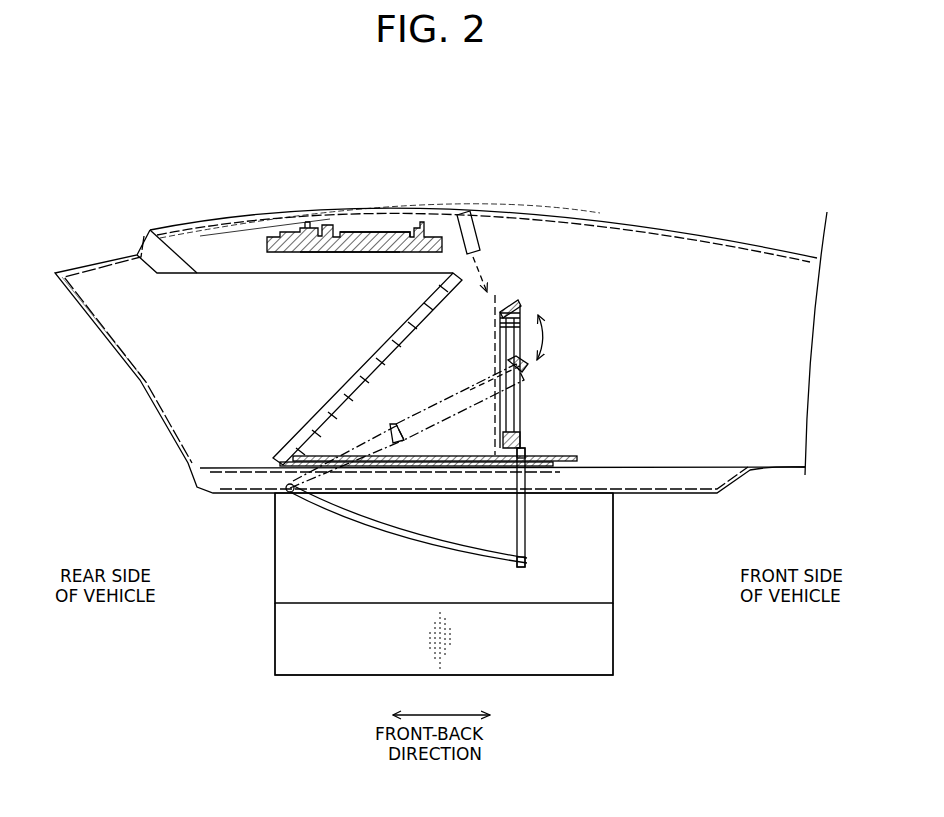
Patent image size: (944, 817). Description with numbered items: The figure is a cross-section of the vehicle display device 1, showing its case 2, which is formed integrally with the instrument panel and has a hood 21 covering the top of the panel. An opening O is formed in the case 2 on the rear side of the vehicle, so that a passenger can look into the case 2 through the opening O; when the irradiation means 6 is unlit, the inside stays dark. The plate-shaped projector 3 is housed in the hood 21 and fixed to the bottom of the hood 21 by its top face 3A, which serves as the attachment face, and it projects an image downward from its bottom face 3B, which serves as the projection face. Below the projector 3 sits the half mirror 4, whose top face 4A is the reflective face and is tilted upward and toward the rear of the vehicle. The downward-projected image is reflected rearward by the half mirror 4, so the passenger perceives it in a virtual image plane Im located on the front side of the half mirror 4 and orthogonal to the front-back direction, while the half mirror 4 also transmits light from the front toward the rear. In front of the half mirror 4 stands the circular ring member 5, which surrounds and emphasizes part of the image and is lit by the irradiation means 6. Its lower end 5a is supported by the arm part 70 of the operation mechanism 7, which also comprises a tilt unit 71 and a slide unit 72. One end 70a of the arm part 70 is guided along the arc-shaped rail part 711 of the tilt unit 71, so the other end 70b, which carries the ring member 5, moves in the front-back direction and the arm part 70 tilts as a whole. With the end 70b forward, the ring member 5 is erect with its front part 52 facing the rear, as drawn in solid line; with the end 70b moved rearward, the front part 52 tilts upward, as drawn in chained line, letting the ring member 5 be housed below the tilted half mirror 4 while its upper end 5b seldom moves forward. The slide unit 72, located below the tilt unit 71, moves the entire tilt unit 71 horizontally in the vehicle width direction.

The vehicle display device 1 is at (553, 170).
The case 2 is at (380, 200).
The hood 21 is at (203, 230).
The projector 3 is at (312, 233).
The top face 3A is at (393, 230).
The bottom face 3B is at (330, 254).
The half mirror 4 is at (344, 385).
The top face 4A is at (327, 405).
The ring member 5 is at (515, 305).
The lower end 5a is at (525, 440).
The upper end 5b is at (518, 305).
The front part 52 is at (494, 365).
The irradiation means 6 is at (462, 212).
The operation mechanism 7 is at (652, 585).
The arm part 70 is at (517, 508).
The one end 70a is at (530, 564).
The other end 70b is at (530, 455).
The tilt unit 71 is at (615, 526).
The rail part 711 is at (365, 545).
The slide unit 72 is at (615, 650).
The virtual image plane Im is at (540, 392).
The opening O is at (122, 385).